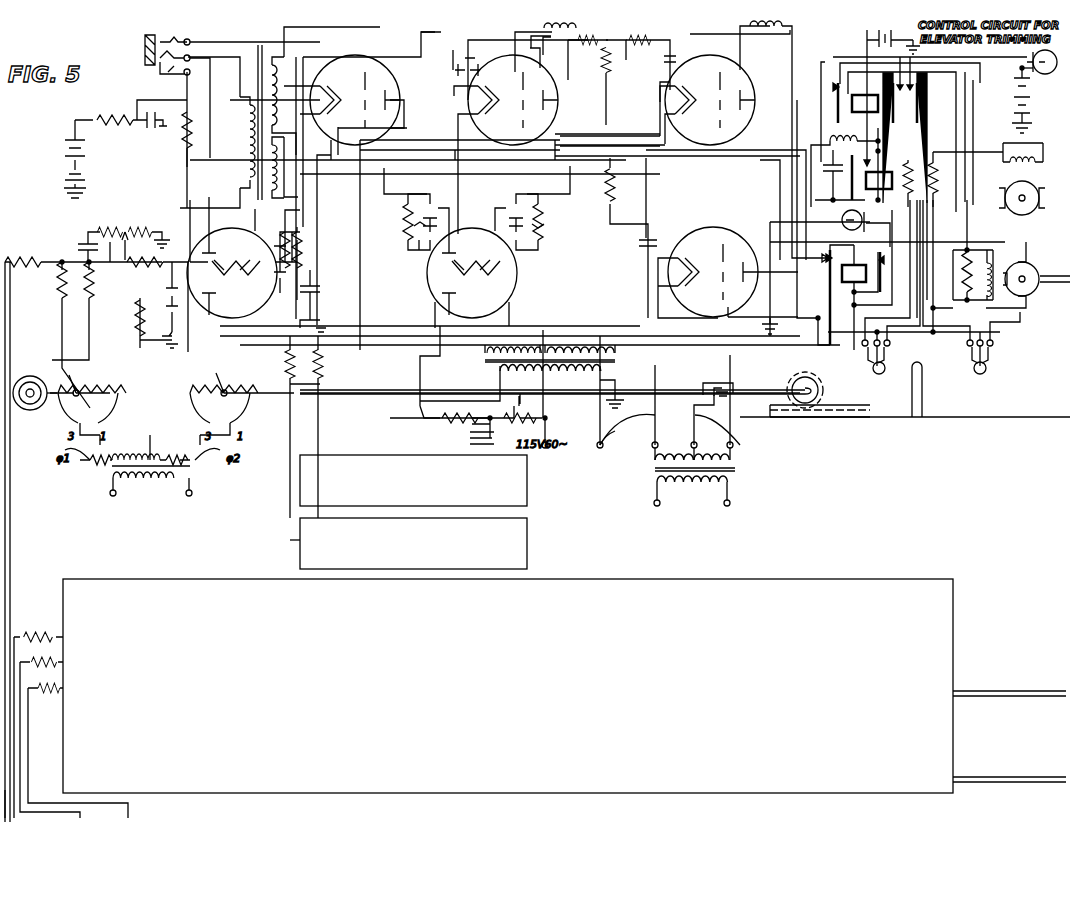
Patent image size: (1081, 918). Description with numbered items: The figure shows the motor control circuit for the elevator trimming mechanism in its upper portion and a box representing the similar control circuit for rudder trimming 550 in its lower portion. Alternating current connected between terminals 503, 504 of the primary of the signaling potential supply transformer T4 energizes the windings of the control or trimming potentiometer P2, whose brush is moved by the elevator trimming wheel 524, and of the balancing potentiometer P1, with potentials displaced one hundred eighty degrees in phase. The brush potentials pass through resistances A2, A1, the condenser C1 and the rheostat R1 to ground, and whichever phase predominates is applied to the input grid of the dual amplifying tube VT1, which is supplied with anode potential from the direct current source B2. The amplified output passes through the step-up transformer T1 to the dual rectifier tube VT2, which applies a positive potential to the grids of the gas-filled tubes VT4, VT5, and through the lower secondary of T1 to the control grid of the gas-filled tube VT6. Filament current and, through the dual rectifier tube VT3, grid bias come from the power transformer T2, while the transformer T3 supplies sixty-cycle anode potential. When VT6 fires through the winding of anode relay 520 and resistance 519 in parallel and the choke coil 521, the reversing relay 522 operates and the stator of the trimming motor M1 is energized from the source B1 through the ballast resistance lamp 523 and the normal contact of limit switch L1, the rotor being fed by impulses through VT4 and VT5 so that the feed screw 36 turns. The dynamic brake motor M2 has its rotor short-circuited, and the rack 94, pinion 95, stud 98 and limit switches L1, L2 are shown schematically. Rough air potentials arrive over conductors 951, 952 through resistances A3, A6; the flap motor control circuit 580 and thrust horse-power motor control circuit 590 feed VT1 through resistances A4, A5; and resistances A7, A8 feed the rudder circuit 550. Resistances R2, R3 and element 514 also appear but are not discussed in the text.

The step-up transformer T1 is at (255, 86).
The direct current source B2 is at (81, 158).
The rheostat R1 is at (135, 219).
The condenser C1 is at (80, 244).
The resistance A3 is at (29, 252).
The resistance A2 is at (54, 286).
The resistance A1 is at (95, 284).
The dual amplifying tube VT1 is at (234, 223).
The dual rectifier tube VT2 is at (360, 58).
The dual rectifier tube VT3 is at (484, 222).
The gas-filled tube VT4 is at (540, 116).
The gas-filled tube VT5 is at (740, 116).
The gas-filled tube VT6 is at (714, 226).
The resistor R2 is at (560, 236).
The resistor R3 is at (408, 236).
The power transformer T2 is at (618, 362).
The transformer T3 is at (686, 433).
The signaling potential supply transformer T4 is at (187, 464).
The balancing potentiometer P1 is at (238, 368).
The control or trimming potentiometer P2 is at (72, 366).
The elevator trimming wheel 524 is at (34, 412).
The terminal 503 is at (111, 498).
The terminal 504 is at (193, 498).
The conductor 951 is at (10, 496).
The conductor 952 is at (14, 728).
The resistance A4 is at (322, 369).
The resistance A5 is at (294, 369).
The resistance A6 is at (44, 622).
The resistance A7 is at (45, 670).
The resistance A8 is at (48, 692).
The flap motor control circuit 580 is at (527, 480).
The thrust horse-power motor control circuit 590 is at (527, 545).
The control circuit for rudder trimming 550 is at (953, 610).
The pinion 95 is at (796, 382).
The rack 94 is at (835, 408).
The stud 98 is at (920, 380).
The limit switch L1 is at (874, 372).
The limit switch L2 is at (980, 372).
The reversing relay 522 is at (852, 101).
The choke coil 521 is at (837, 136).
The anode relay 520 is at (885, 172).
The resistance 519 is at (913, 167).
The ballast resistance lamp 523 is at (1035, 53).
The source of direct current B1 is at (1035, 92).
The dynamic brake motor M2 is at (1030, 179).
The trimming motor M1 is at (1006, 254).
The feed screw 36 is at (1056, 272).
The relay 514 is at (842, 272).